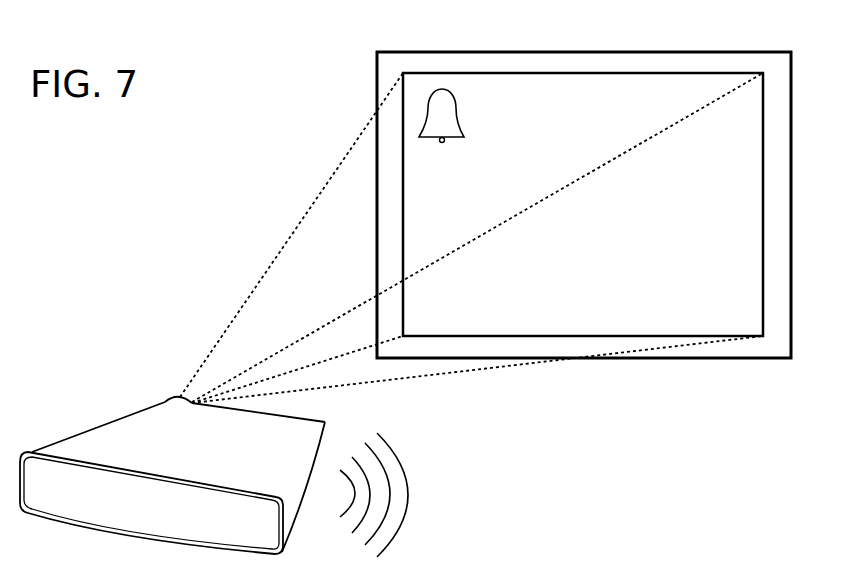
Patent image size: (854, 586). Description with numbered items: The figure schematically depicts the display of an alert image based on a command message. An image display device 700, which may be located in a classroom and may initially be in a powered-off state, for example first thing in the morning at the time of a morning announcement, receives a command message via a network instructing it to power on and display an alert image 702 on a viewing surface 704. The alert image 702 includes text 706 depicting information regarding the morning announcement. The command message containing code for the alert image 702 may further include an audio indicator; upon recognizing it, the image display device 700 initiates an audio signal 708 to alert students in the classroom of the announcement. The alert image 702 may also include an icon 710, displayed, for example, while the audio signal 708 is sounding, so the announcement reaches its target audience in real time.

The image display device 700 is at (150, 412).
The alert image 702 is at (763, 166).
The viewing surface 704 is at (743, 52).
The text 706 is at (632, 237).
The audio signal 708 is at (422, 453).
The icon 710 is at (487, 108).